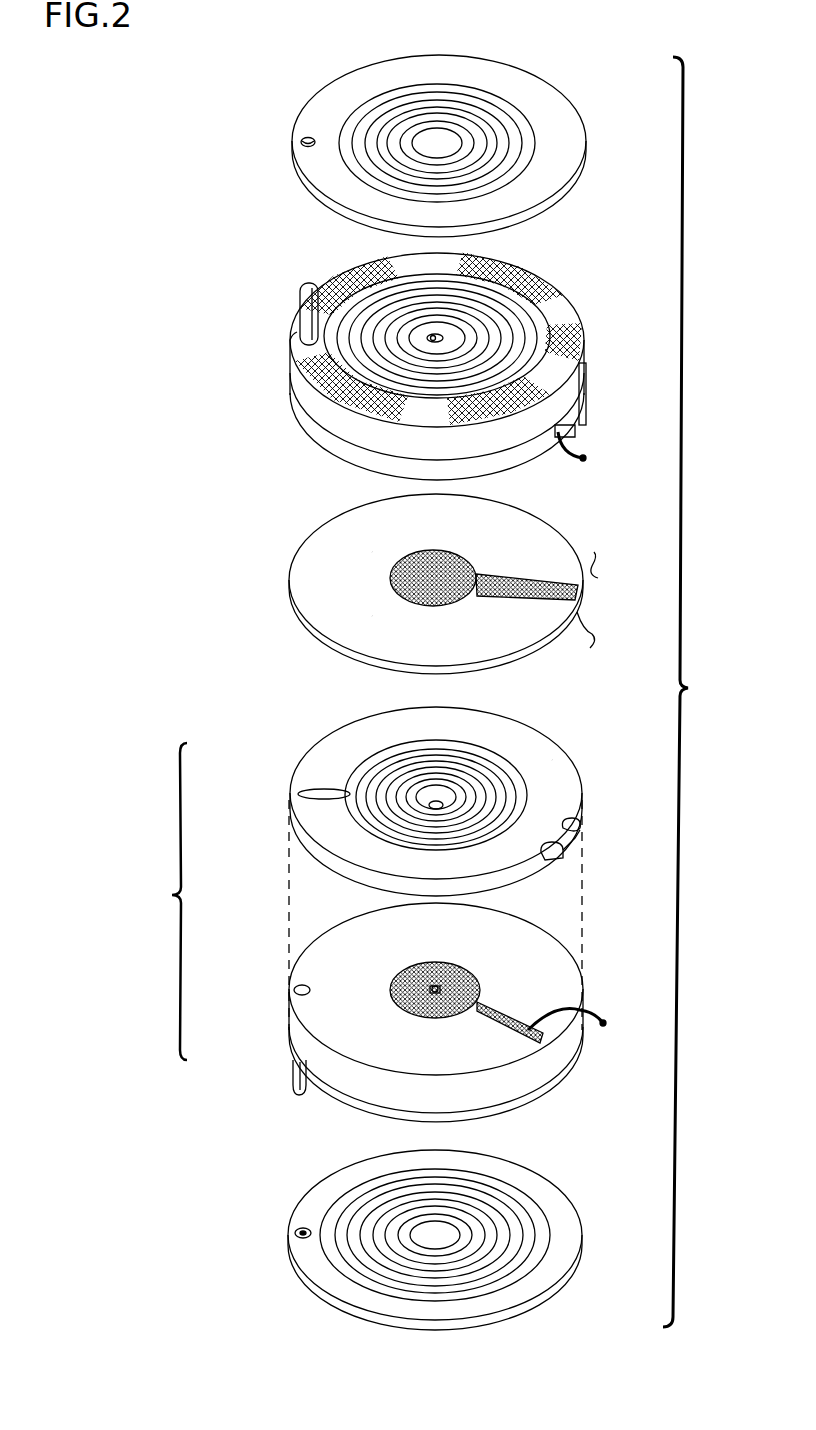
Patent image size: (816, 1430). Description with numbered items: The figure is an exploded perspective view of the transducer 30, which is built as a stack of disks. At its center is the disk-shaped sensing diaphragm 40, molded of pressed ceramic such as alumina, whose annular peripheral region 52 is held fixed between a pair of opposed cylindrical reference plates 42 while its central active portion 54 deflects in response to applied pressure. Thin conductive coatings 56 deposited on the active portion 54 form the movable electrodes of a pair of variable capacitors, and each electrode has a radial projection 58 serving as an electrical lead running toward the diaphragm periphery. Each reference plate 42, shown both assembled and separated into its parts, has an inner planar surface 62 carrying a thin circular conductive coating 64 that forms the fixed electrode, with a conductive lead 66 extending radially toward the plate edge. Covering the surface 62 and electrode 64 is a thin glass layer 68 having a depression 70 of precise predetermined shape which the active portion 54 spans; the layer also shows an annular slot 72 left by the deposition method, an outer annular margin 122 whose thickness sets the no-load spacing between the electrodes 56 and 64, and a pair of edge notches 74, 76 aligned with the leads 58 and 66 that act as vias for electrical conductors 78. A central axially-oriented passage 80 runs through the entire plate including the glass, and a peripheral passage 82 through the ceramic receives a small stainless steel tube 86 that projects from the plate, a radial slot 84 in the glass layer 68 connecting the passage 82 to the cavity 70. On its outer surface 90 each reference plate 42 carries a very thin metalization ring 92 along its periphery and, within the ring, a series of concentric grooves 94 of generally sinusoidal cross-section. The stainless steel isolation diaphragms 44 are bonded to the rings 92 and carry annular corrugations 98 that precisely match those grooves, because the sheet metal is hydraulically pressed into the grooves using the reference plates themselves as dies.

The transducer 30 is at (691, 692).
The sensing diaphragm 40 is at (300, 620).
The reference plate 42 is at (290, 372).
The isolation diaphragm 44 is at (583, 184).
The annular peripheral region 52 is at (372, 616).
The active portion 54 is at (372, 552).
The conductive coating 56 is at (465, 562).
The projection 58 is at (540, 583).
The inner planar surface 62 is at (338, 958).
The conductive coating 64 is at (475, 975).
The conductive lead 66 is at (505, 1022).
The glass layer 68 is at (302, 430).
The depression 70 is at (505, 775).
The annular slot 72 is at (393, 765).
The edge notch 74 is at (586, 408).
The edge notch 76 is at (575, 432).
The electrical conductor 78 is at (588, 460).
The central passage 80 is at (442, 337).
The peripheral passage 82 is at (293, 332).
The radial slot 84 is at (305, 792).
The stainless steel tube 86 is at (310, 284).
The outer surface 90 is at (540, 318).
The metalization ring 92 is at (585, 350).
The concentric grooves 94 is at (467, 305).
The annular corrugations 98 is at (492, 148).
The outer annular margin 122 is at (552, 760).